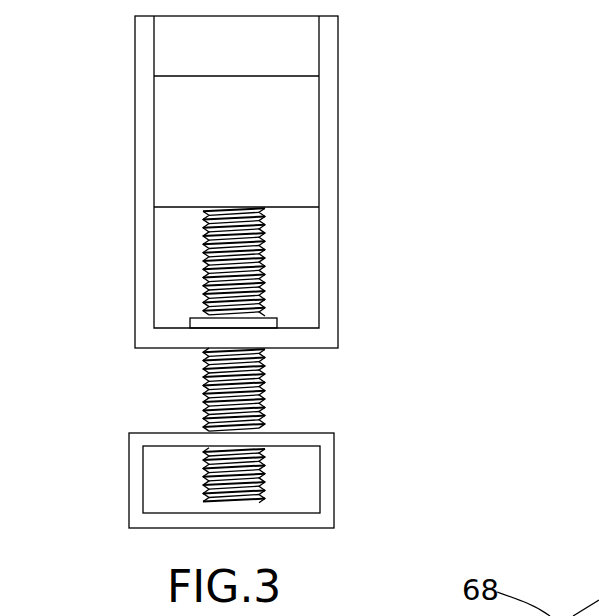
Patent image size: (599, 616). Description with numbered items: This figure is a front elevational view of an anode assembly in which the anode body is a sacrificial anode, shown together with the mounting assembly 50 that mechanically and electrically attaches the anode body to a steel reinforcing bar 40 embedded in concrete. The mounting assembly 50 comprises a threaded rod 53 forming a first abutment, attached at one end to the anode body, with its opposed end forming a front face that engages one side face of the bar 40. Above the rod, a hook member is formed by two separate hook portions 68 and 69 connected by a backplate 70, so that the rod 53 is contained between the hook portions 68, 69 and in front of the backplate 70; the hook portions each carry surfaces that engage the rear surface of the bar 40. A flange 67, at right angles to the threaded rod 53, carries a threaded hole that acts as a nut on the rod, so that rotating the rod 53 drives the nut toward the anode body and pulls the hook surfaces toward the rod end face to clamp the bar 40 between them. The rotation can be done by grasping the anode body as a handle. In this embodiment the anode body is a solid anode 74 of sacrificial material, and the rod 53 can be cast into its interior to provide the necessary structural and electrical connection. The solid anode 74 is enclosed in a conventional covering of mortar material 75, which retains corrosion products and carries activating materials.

The mounting assembly 50 is at (463, 366).
The steel reinforcing bar 40 is at (251, 152).
The threaded rod 53 is at (243, 375).
The flange 67 is at (283, 342).
The hook portion 68 is at (133, 109).
The hook portion 69 is at (327, 102).
The backplate 70 is at (251, 64).
The solid anode 74 is at (303, 456).
The mortar material 75 is at (325, 491).